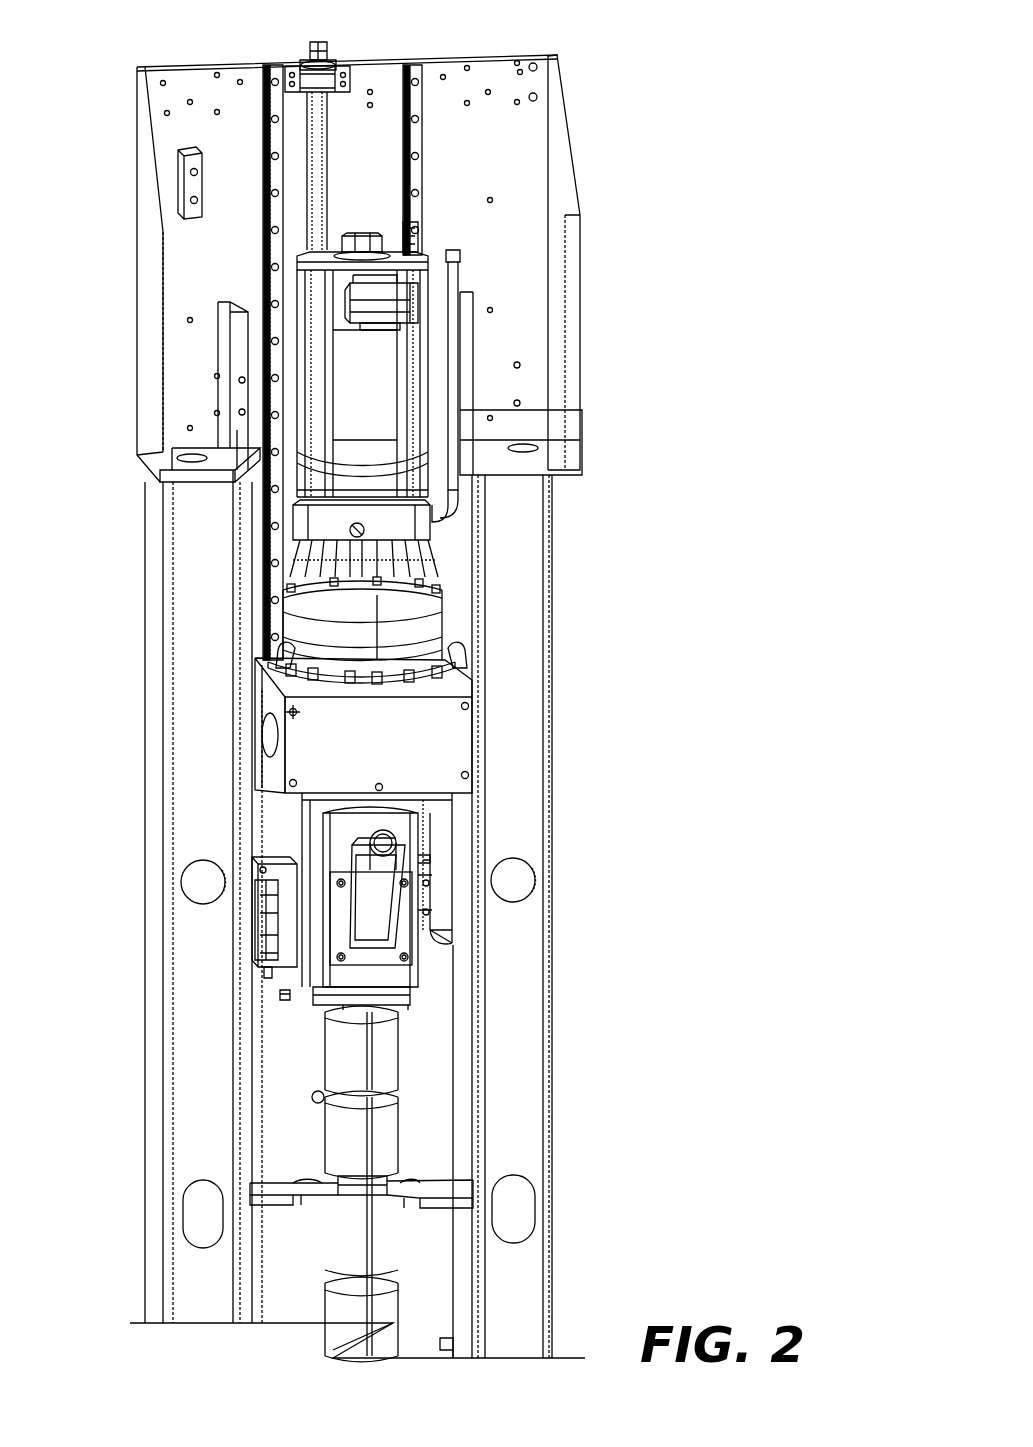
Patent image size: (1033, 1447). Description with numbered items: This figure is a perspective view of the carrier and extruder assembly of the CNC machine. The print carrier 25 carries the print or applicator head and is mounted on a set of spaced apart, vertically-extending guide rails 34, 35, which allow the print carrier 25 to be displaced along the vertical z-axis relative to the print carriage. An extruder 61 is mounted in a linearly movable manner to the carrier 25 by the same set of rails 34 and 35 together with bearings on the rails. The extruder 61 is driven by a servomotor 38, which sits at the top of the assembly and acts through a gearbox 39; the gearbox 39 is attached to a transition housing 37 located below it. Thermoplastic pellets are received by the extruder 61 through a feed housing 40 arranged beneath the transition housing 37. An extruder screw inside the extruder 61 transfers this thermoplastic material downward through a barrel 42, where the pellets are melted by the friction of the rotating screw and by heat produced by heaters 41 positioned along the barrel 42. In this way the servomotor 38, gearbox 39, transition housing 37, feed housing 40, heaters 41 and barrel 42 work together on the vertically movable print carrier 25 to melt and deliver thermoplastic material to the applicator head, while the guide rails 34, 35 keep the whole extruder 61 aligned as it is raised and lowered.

The print carrier 25 is at (668, 308).
The guide rail 34 is at (277, 68).
The guide rail 35 is at (413, 68).
The transition housing 37 is at (430, 747).
The servomotor 38 is at (375, 395).
The gearbox 39 is at (410, 615).
The feed housing 40 is at (407, 833).
The heaters 41 is at (383, 1057).
The barrel 42 is at (368, 1183).
The extruder 61 is at (289, 849).